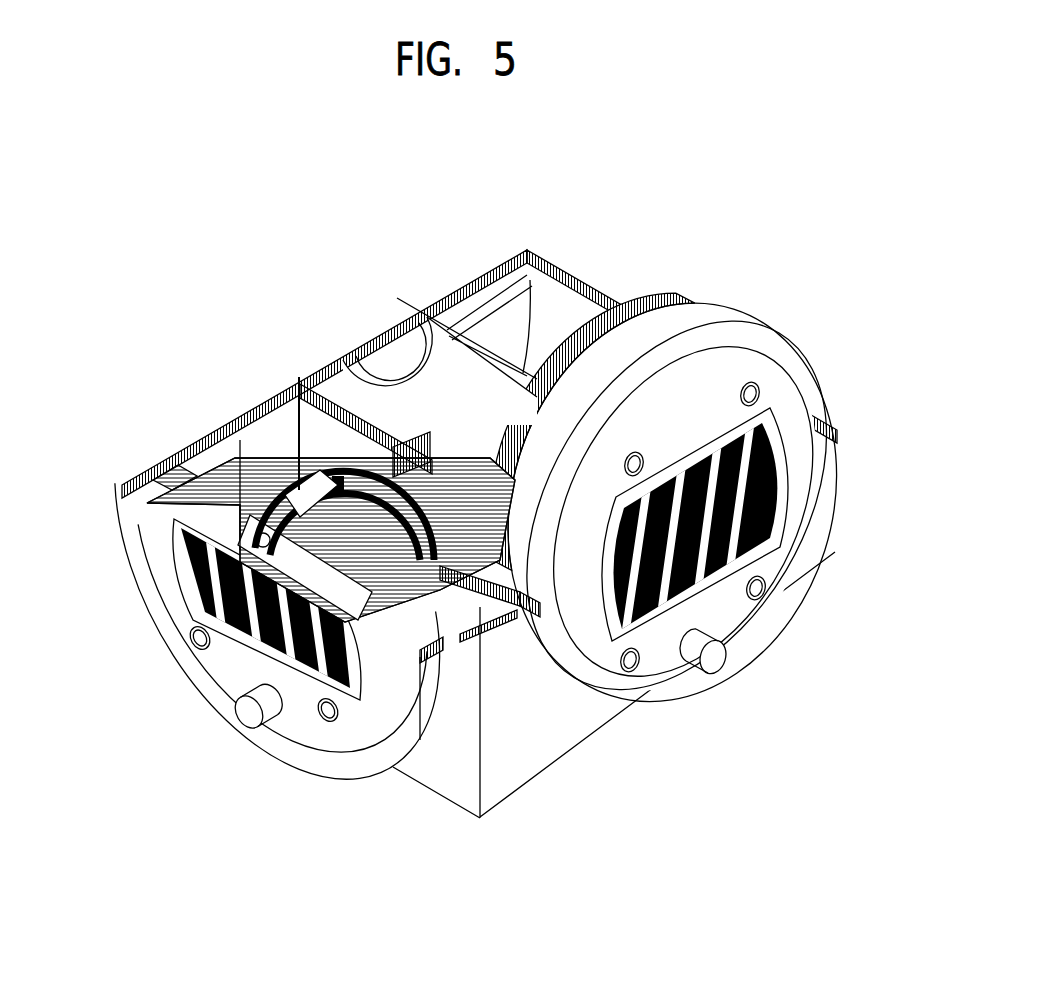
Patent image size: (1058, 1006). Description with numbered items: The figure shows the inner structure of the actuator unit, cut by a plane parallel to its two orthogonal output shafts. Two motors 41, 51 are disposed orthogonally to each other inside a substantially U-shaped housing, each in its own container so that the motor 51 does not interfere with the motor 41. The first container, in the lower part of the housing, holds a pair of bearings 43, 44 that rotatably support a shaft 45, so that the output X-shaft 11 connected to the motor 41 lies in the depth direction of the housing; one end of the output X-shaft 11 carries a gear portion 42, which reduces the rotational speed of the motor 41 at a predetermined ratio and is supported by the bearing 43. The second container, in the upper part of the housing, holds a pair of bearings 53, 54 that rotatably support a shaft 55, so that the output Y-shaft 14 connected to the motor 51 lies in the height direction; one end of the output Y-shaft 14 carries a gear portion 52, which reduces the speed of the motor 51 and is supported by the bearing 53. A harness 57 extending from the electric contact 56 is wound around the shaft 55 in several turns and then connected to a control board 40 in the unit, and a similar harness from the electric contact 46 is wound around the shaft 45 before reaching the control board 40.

The output X-shaft 11 is at (732, 616).
The output Y-shaft 14 is at (243, 672).
The control board 40 is at (530, 262).
The motor 41 is at (703, 678).
The gear portion 42 is at (634, 308).
The bearing 43 is at (733, 328).
The bearing 44 is at (365, 337).
The shaft 45 is at (437, 380).
The electric contact 46 is at (773, 527).
The motor 51 is at (413, 432).
The gear portion 52 is at (468, 628).
The bearing 53 is at (160, 475).
The bearing 54 is at (300, 483).
The shaft 55 is at (290, 512).
The electric contact 56 is at (187, 590).
The harness 57 is at (300, 460).